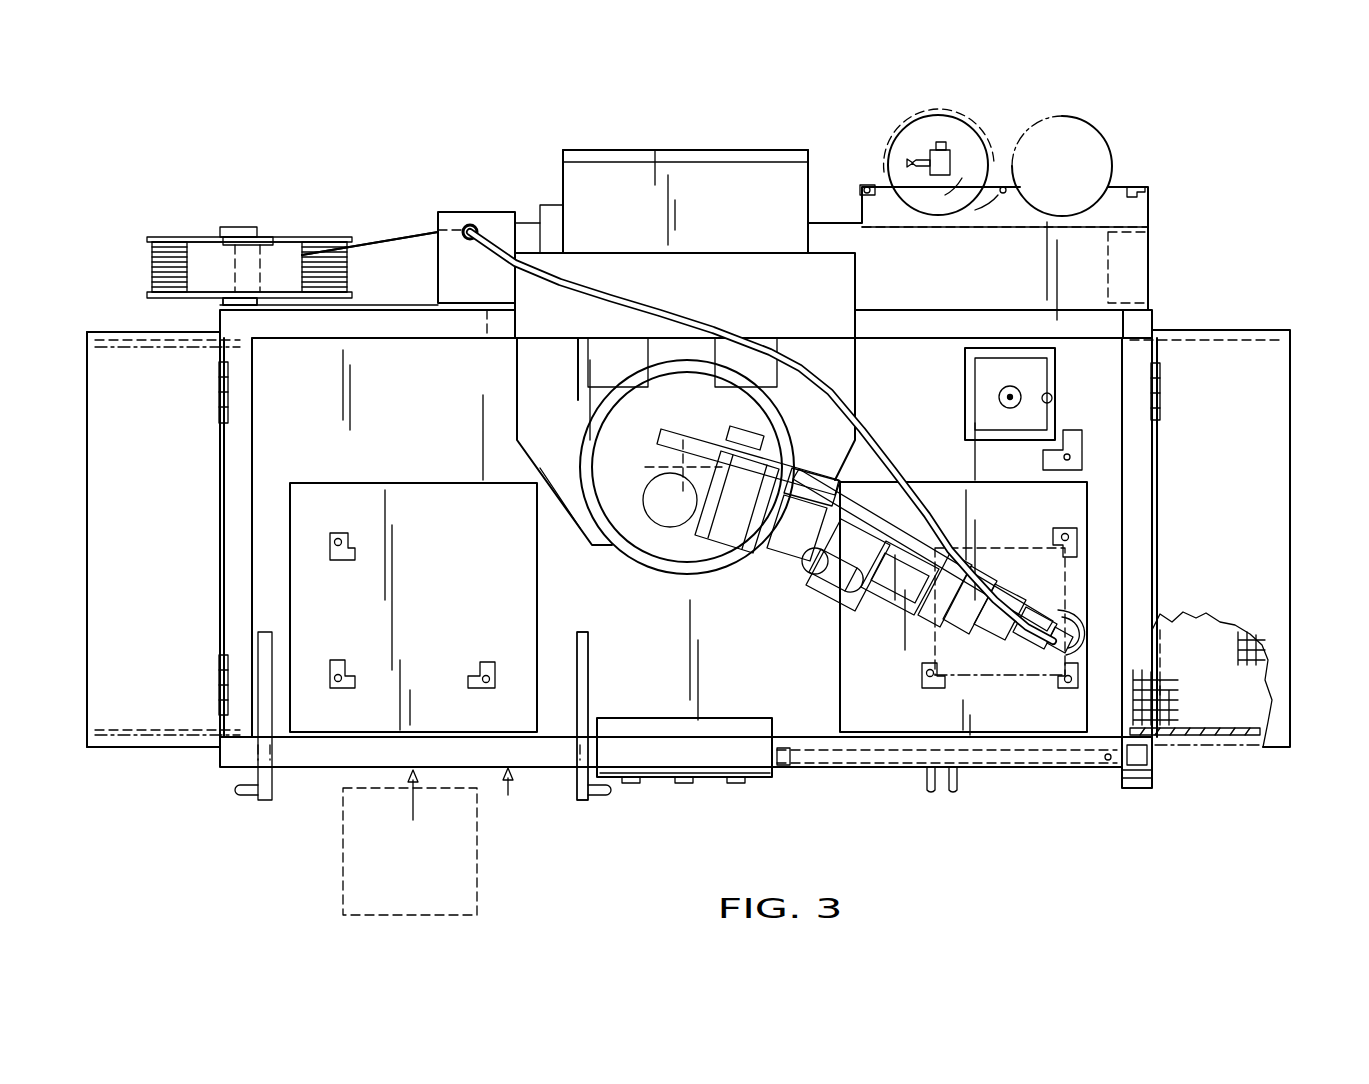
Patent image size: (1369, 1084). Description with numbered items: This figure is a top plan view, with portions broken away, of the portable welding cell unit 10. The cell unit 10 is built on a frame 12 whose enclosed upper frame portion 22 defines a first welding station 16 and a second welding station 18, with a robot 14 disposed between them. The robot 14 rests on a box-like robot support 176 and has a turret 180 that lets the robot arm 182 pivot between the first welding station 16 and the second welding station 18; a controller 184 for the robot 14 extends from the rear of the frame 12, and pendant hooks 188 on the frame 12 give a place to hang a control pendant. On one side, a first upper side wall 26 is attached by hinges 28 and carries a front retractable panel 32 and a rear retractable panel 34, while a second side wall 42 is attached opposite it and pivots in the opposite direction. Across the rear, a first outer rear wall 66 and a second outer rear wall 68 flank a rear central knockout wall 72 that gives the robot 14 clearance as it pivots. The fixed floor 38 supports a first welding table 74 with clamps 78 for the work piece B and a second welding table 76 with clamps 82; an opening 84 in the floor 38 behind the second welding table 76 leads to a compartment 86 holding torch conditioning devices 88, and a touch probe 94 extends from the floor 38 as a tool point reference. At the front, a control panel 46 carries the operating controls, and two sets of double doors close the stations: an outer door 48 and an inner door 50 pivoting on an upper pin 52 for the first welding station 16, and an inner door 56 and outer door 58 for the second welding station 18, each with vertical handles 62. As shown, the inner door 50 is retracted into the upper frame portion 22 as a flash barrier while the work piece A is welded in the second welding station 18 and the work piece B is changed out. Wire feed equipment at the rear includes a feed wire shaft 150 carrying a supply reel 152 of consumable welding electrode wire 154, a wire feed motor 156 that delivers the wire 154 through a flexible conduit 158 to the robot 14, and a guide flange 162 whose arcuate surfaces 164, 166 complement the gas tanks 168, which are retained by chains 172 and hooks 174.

The portable welding cell unit 10 is at (1188, 157).
The frame 12 is at (1100, 306).
The robot 14 is at (868, 505).
The first welding station 16 is at (385, 383).
The second welding station 18 is at (1112, 500).
The upper frame portion 22 is at (508, 800).
The first upper side wall 26 is at (105, 628).
The hinges 28 is at (217, 392).
The front retractable panel 32 is at (140, 742).
The rear retractable panel 34 is at (138, 330).
The fixed floor 38 is at (272, 512).
The second side wall 42 is at (1268, 500).
The control panel 46 is at (708, 778).
The outer door 48 is at (264, 802).
The inner door 50 is at (583, 802).
The upper pin 52 is at (570, 762).
The inner door 56 is at (862, 764).
The outer door 58 is at (1035, 766).
The handles 62 is at (240, 795).
The first outer rear wall 66 is at (300, 290).
The second outer rear wall 68 is at (958, 305).
The rear central knockout wall 72 is at (708, 250).
The first welding table 74 is at (322, 490).
The second welding table 76 is at (845, 646).
The clamps 78 is at (355, 542).
The clamps 82 is at (1078, 548).
The opening 84 is at (1052, 398).
The compartment 86 is at (1055, 370).
The torch conditioning devices 88 is at (1000, 395).
The touch probe 94 is at (1070, 456).
The feed wire shaft 150 is at (250, 305).
The supply reel 152 is at (172, 237).
The consumable welding electrode wire 154 is at (420, 232).
The wire feed motor 156 is at (478, 222).
The flexible tube or conduit 158 is at (672, 312).
The guide flange 162 is at (1152, 215).
The arcuate surface 164 is at (1100, 183).
The arcuate surface 166 is at (952, 208).
The tanks 168 is at (965, 130).
The chains 172 is at (910, 122).
The hooks 174 is at (862, 190).
The robot support 176 is at (585, 397).
The turret 180 is at (640, 558).
The robot arm 182 is at (832, 405).
The controller 184 is at (592, 184).
The pendant hooks 188 is at (1136, 790).
The work piece A is at (1068, 580).
The work piece B is at (343, 890).